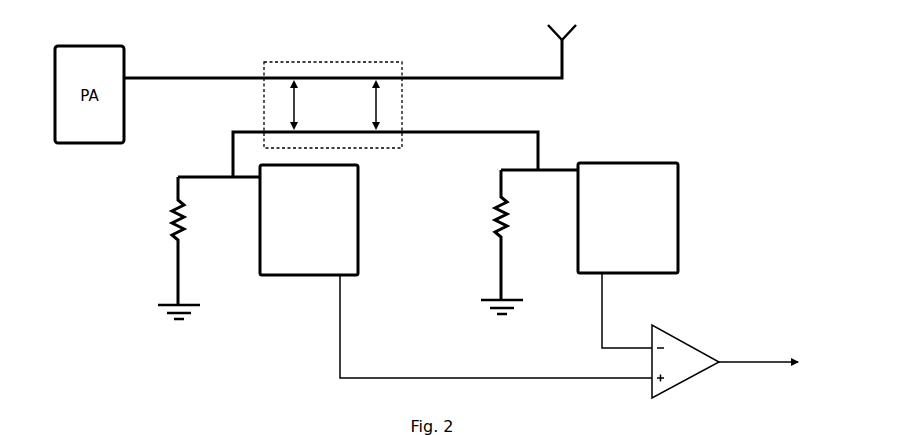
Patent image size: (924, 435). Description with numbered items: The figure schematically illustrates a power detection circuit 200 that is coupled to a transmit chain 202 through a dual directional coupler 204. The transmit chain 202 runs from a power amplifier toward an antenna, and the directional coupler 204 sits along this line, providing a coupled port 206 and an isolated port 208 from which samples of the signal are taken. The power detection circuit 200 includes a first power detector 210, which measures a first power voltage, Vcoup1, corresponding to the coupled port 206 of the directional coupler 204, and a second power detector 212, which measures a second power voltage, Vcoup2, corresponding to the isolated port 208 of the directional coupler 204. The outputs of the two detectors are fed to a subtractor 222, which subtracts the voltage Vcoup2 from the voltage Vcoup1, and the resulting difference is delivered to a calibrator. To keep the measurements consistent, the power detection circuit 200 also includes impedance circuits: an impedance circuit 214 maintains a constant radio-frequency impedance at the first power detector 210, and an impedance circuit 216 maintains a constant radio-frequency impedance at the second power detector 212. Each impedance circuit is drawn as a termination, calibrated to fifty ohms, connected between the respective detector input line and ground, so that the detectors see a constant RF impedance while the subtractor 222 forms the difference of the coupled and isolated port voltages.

The power detection circuit 200 is at (805, 250).
The transmit chain 202 is at (475, 78).
The dual directional coupler 204 is at (323, 62).
The coupled port 206 is at (296, 128).
The isolated port 208 is at (378, 130).
The first power detector 210 is at (281, 277).
The second power detector 212 is at (629, 163).
The impedance circuit 214 is at (178, 278).
The impedance circuit 216 is at (501, 279).
The subtractor 222 is at (684, 340).